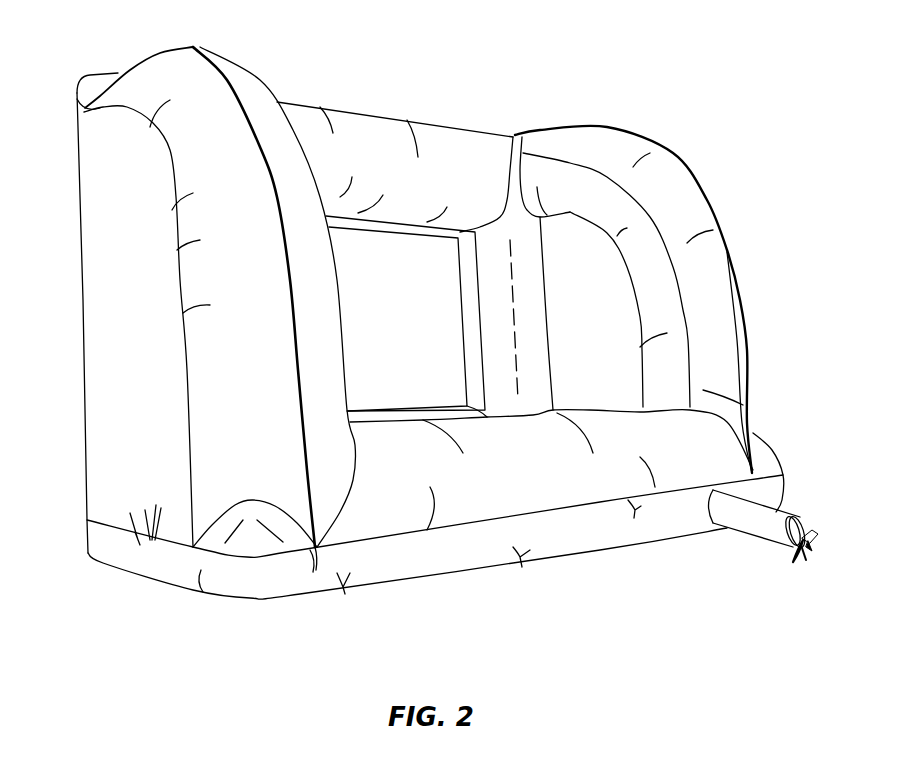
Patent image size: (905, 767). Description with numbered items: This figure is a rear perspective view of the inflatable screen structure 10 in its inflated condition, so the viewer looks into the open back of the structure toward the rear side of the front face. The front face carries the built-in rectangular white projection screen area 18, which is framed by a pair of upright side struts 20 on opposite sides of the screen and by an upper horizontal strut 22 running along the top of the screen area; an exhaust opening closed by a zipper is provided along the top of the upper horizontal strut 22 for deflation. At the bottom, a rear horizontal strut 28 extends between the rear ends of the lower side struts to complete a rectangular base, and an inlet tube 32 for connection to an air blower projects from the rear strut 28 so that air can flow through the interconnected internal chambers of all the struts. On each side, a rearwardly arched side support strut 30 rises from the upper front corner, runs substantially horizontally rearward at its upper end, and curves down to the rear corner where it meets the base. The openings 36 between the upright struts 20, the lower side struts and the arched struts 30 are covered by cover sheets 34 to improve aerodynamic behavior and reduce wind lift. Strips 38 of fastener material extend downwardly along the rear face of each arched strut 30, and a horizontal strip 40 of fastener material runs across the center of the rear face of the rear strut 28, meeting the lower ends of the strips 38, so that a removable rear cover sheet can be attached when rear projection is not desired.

The inflatable screen structure 10 is at (699, 112).
The projection screen area 18 is at (392, 326).
The upright side struts 20 is at (523, 270).
The upper horizontal strut 22 is at (430, 143).
The rear horizontal strut 28 is at (567, 487).
The arched side support struts 30 is at (253, 95).
The inlet tube 32 is at (788, 507).
The cover sheets 34 is at (100, 323).
The openings 36 is at (591, 332).
The strips of fastener material 38 is at (290, 332).
The horizontal strip of fastener material 40 is at (677, 493).